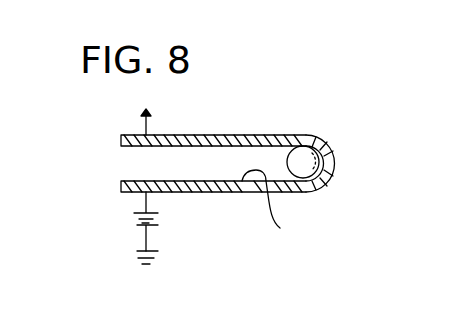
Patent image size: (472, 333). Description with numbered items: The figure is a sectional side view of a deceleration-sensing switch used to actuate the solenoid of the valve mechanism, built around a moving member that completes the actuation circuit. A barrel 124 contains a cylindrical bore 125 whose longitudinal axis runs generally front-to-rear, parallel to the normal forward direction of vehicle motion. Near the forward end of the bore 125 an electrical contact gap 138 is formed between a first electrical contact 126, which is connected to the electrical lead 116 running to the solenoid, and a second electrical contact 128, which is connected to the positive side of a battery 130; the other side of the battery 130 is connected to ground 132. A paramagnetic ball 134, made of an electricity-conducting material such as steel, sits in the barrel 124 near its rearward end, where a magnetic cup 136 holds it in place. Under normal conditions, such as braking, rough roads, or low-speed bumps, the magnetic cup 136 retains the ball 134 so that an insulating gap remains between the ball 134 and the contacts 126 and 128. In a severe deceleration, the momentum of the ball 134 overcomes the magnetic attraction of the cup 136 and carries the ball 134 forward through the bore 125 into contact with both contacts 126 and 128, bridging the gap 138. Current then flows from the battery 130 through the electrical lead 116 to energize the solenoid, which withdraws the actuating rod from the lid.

The electrical lead 116 is at (147, 122).
The barrel 124 is at (243, 192).
The cylindrical bore 125 is at (278, 205).
The first electrical contact 126 is at (135, 149).
The second electrical contact 128 is at (135, 176).
The battery 130 is at (137, 226).
The ground 132 is at (137, 251).
The paramagnetic ball 134 is at (287, 160).
The magnetic cup 136 is at (318, 145).
The gap 138 is at (135, 162).